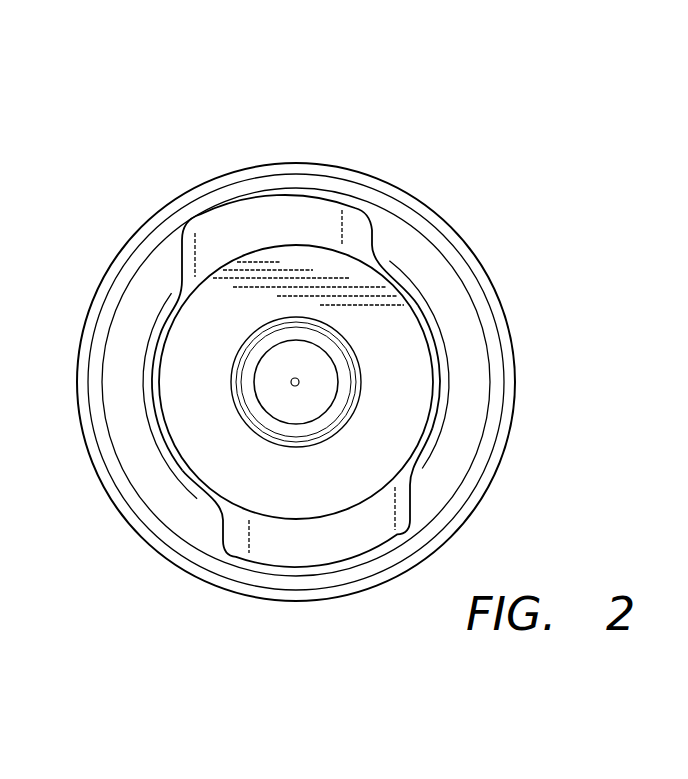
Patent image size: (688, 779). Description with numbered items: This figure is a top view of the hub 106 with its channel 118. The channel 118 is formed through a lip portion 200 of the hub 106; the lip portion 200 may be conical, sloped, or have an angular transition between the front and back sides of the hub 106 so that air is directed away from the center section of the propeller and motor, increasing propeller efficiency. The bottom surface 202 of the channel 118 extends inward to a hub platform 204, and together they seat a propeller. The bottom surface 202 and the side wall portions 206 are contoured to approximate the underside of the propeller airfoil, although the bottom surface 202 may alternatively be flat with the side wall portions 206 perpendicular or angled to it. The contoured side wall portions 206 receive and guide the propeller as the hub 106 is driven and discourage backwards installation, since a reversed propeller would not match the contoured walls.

The hub 106 is at (116, 186).
The channel 118 is at (290, 197).
The lip portion 200 is at (429, 232).
The bottom surface 202 is at (224, 238).
The hub platform 204 is at (189, 365).
The side wall portions 206 is at (352, 225).